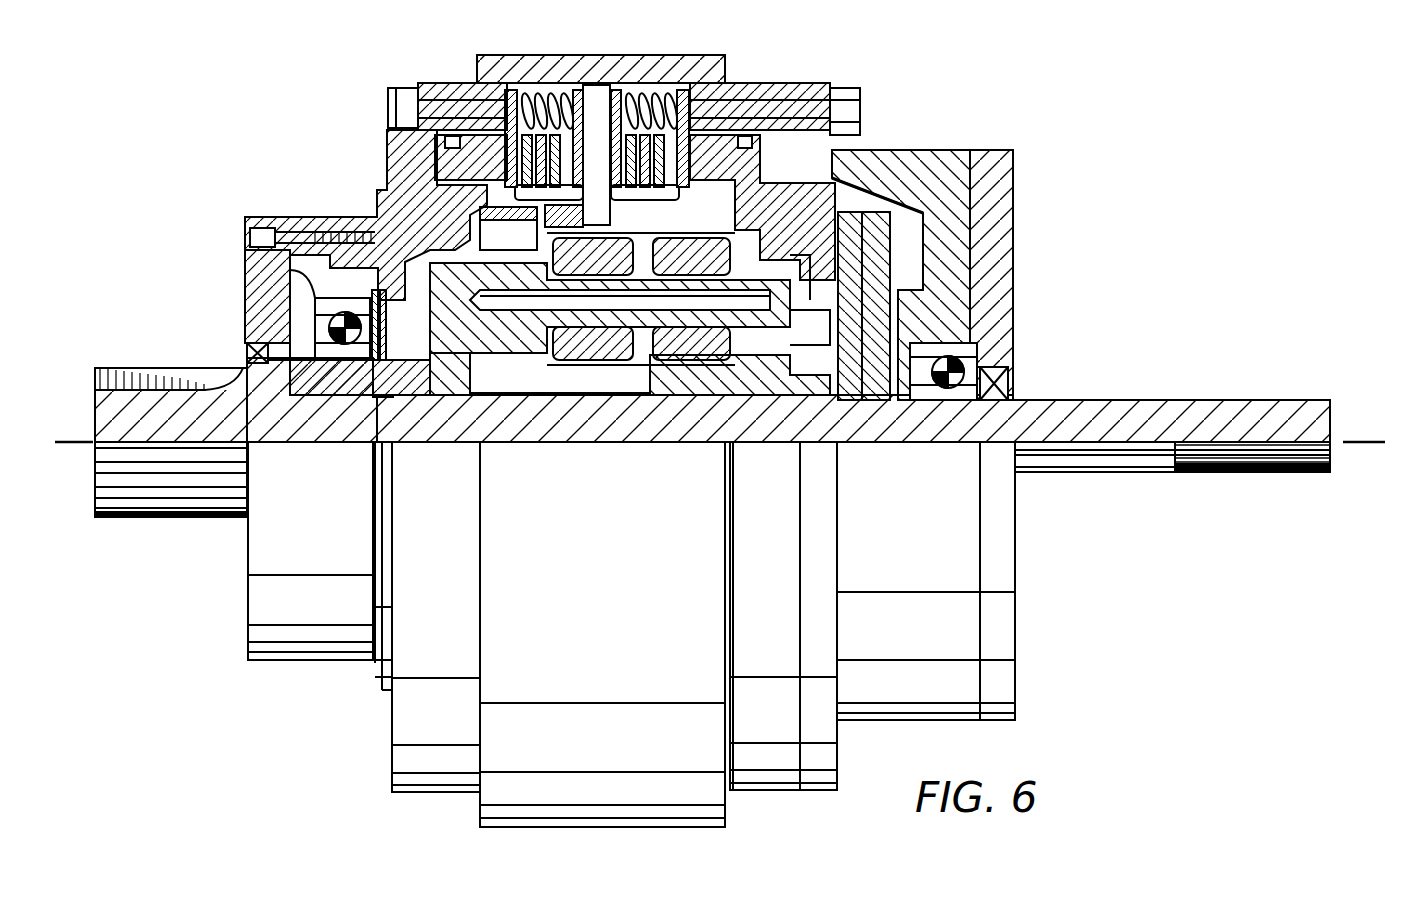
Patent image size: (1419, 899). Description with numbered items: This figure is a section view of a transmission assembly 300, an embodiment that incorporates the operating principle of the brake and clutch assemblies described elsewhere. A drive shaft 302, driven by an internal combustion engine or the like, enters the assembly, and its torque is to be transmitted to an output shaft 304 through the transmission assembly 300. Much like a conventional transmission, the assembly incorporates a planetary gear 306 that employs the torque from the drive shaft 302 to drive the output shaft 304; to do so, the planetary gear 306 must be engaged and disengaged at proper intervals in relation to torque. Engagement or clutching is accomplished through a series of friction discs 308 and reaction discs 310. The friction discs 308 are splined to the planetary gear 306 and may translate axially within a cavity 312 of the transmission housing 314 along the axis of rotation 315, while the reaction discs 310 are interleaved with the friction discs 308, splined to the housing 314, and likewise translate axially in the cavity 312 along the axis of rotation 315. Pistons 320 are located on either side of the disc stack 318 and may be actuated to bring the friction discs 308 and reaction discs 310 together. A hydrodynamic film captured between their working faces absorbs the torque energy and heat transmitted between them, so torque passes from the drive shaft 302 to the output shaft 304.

The transmission assembly 300 is at (1150, 119).
The drive shaft 302 is at (1228, 400).
The output shaft 304 is at (132, 368).
The planetary gear 306 is at (718, 418).
The friction discs 308 is at (531, 227).
The reaction disc 310 is at (533, 132).
The cavity 312 is at (465, 203).
The transmission housing 314 is at (920, 150).
The axis of rotation 315 is at (1362, 436).
The disc stack 318 is at (590, 138).
The pistons 320 is at (468, 142).